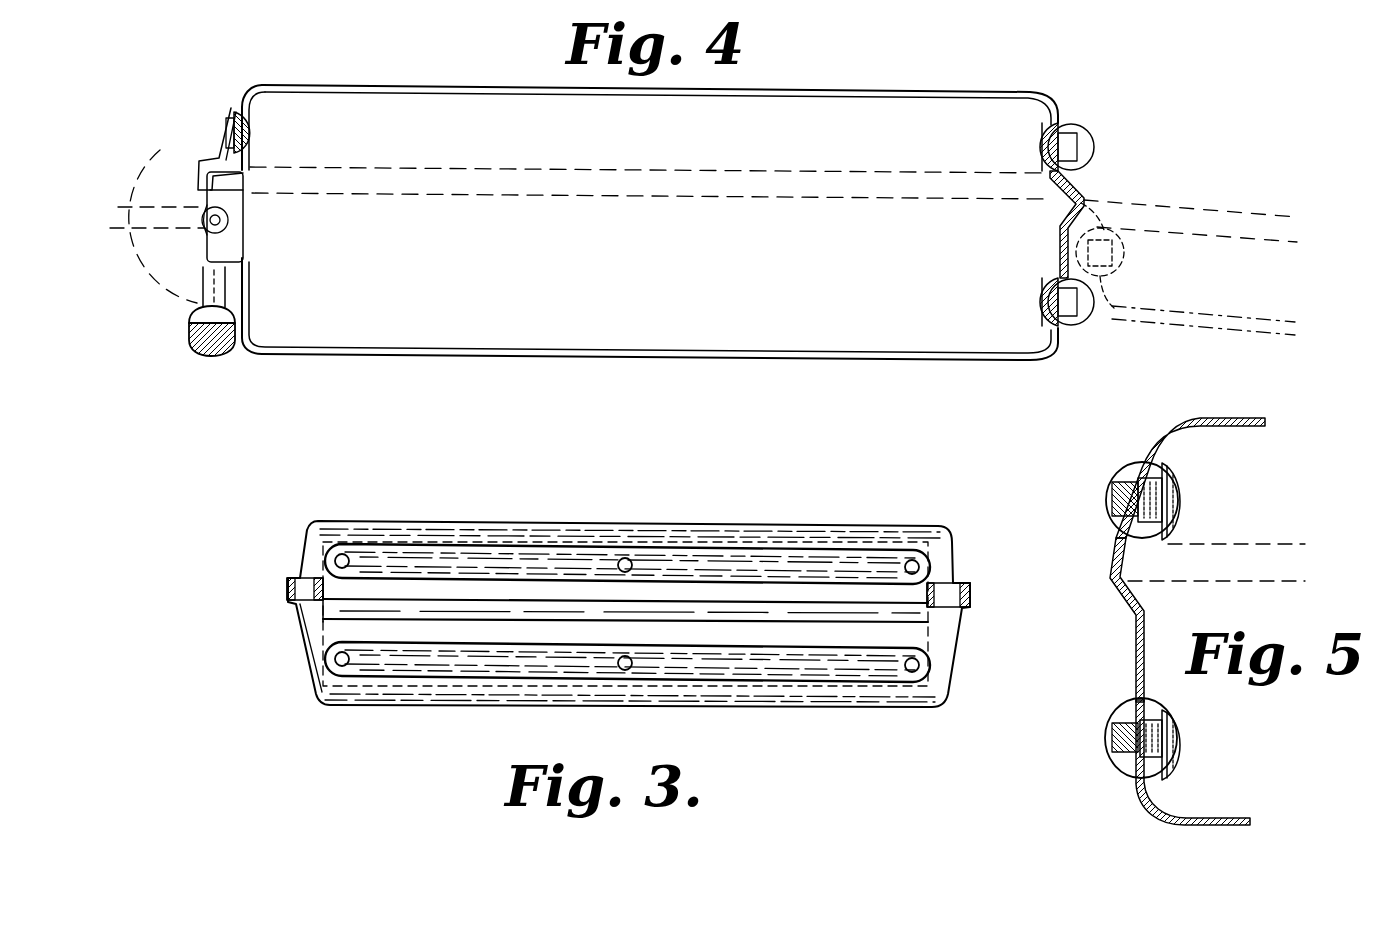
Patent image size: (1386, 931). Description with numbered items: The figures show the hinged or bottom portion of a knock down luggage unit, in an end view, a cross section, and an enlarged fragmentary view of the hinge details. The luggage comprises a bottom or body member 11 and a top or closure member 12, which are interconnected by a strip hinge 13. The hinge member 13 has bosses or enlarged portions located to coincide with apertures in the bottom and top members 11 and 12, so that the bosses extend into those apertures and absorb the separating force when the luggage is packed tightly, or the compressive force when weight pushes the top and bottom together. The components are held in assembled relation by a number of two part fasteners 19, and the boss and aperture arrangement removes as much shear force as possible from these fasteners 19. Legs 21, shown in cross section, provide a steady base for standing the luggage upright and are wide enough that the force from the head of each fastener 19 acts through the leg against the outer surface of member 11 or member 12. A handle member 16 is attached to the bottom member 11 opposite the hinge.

In FIG. 4, the bottom or body member 11 is at (858, 362).
In FIG. 3, the bottom or body member 11 is at (790, 707).
In FIG. 5, the bottom or body member 11 is at (1193, 830).
In FIG. 4, the top or closure member 12 is at (935, 90).
In FIG. 3, the top or closure member 12 is at (697, 525).
In FIG. 5, the top or closure member 12 is at (1220, 416).
In FIG. 4, the strip hinge 13 is at (1082, 190).
In FIG. 3, the strip hinge 13 is at (920, 620).
In FIG. 5, the strip hinge 13 is at (1120, 602).
In FIG. 4, the handle member 16 is at (208, 357).
In FIG. 4, the two part fastener 19 is at (258, 130).
In FIG. 3, the two part fastener 19 is at (915, 567).
In FIG. 5, the two part fastener 19 is at (1180, 500).
In FIG. 4, the legs 21 is at (1082, 125).
In FIG. 3, the legs 21 is at (500, 565).
In FIG. 5, the legs 21 is at (1125, 468).